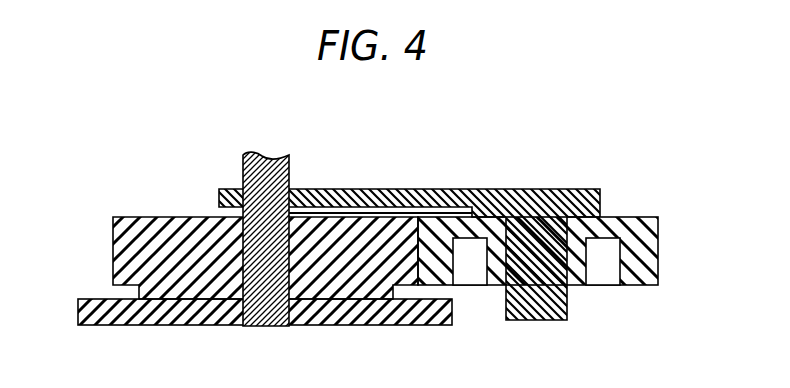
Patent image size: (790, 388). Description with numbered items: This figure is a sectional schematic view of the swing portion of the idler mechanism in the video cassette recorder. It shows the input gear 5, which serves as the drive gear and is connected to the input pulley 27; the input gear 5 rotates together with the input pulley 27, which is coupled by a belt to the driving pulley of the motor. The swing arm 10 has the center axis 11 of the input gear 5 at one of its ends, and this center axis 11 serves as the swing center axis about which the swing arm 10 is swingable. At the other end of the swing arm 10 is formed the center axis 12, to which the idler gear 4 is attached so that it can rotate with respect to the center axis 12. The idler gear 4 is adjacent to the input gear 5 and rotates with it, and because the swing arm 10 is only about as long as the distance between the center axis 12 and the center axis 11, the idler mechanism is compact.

The idler gear 4 is at (627, 231).
The input gear 5 is at (169, 237).
The swing arm 10 is at (384, 191).
The center axis 11 is at (266, 160).
The center axis 12 is at (533, 308).
The input pulley 27 is at (126, 312).